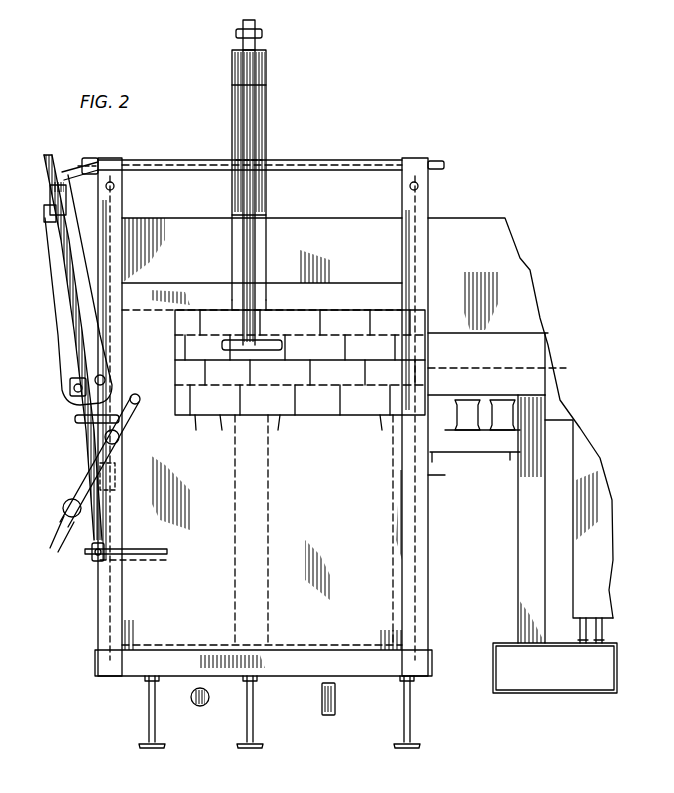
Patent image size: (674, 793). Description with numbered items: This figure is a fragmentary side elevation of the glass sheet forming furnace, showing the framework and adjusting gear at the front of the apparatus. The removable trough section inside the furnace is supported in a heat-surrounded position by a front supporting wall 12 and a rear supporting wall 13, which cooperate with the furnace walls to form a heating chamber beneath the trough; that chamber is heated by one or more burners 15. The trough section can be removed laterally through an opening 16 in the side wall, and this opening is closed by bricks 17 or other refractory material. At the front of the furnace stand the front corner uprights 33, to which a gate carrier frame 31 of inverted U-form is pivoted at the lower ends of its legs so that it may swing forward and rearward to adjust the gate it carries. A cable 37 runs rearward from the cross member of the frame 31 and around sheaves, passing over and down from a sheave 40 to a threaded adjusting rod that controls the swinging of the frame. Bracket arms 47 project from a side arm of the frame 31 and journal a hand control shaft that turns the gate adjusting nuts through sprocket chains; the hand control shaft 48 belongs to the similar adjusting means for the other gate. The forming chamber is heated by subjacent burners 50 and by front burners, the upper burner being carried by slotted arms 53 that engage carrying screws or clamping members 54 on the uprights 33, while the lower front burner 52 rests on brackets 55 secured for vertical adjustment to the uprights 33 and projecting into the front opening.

The front supporting wall 12 is at (258, 523).
The rear supporting wall 13 is at (396, 525).
The burner 15 is at (335, 700).
The opening 16 is at (305, 418).
The bricks 17 is at (328, 374).
The gate carrier frame 31 is at (58, 286).
The front corner uprights 33 is at (113, 272).
The cable 37 is at (80, 172).
The sheave 40 is at (70, 310).
The bracket arms 47 is at (50, 214).
The hand control shaft 48 is at (258, 255).
The subjacent burners 50 is at (200, 706).
The lower front burner 52 is at (106, 382).
The arms 53 is at (92, 461).
The carrying screws or clamping members 54 is at (121, 437).
The brackets 55 is at (96, 552).